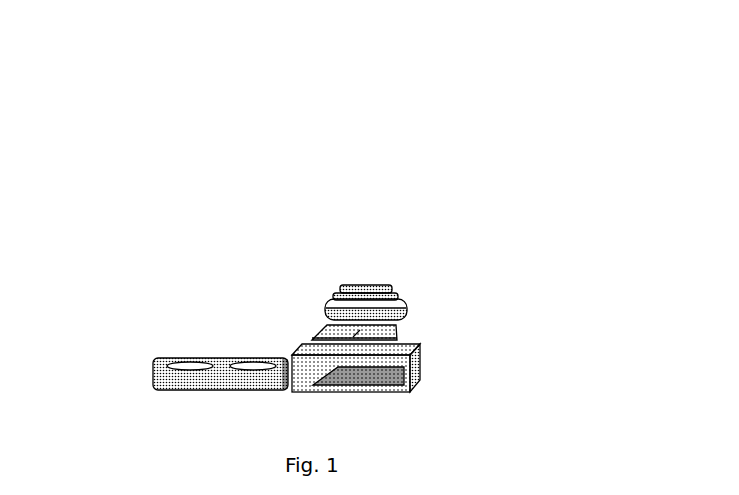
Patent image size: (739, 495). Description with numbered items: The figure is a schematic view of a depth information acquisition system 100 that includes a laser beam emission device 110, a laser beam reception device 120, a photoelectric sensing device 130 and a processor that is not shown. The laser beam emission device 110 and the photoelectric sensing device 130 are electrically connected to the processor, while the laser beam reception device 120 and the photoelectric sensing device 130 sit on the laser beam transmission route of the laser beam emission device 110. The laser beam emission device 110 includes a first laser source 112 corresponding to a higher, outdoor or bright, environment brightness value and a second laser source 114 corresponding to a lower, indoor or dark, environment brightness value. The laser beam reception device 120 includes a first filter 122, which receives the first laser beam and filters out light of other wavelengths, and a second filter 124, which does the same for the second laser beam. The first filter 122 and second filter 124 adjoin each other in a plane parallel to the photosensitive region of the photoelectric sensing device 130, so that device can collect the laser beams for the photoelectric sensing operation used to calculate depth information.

The depth information acquisition system 100 is at (500, 100).
The laser beam emission device 110 is at (70, 202).
The first laser source 112 is at (177, 352).
The second laser source 114 is at (245, 350).
The laser beam reception device 120 is at (443, 235).
The first filter 122 is at (346, 320).
The second filter 124 is at (389, 318).
The photoelectric sensing device 130 is at (388, 378).